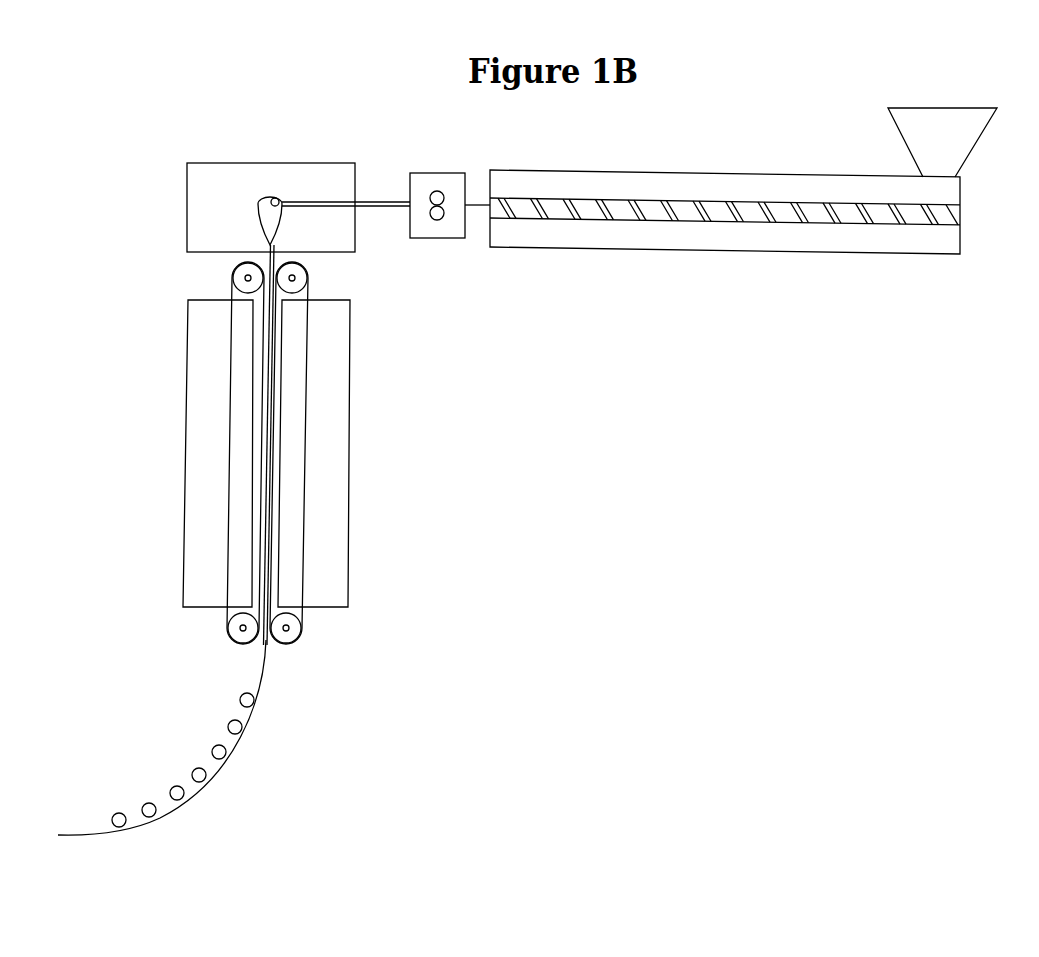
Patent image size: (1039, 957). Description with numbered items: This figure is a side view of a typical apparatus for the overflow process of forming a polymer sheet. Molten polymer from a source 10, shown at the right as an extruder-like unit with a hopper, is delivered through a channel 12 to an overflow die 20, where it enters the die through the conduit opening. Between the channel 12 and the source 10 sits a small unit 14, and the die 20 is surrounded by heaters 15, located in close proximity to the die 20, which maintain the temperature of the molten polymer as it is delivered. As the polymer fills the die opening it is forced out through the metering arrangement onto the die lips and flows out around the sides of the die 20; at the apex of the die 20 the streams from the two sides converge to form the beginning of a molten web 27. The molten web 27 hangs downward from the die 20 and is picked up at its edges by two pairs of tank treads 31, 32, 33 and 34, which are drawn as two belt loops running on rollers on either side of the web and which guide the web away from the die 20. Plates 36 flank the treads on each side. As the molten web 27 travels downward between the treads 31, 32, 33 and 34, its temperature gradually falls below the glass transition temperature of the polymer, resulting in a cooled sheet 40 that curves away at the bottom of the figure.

The source 10 is at (596, 248).
The channel 12 is at (380, 209).
The metering pump 14 is at (430, 238).
The heaters 15 is at (270, 163).
The overflow die 20 is at (258, 207).
The molten web 27 is at (273, 253).
The tank tread 31 is at (182, 453).
The tank tread 32 is at (230, 423).
The tank tread 33 is at (355, 453).
The tank tread 34 is at (307, 402).
The plates 36 is at (184, 538).
The cooled sheet 40 is at (263, 667).